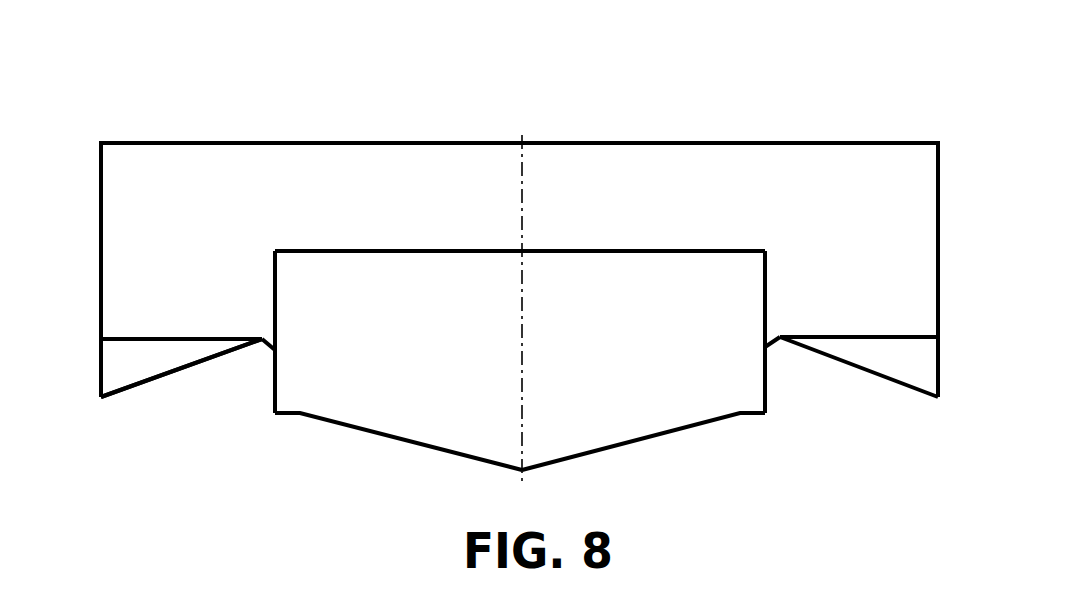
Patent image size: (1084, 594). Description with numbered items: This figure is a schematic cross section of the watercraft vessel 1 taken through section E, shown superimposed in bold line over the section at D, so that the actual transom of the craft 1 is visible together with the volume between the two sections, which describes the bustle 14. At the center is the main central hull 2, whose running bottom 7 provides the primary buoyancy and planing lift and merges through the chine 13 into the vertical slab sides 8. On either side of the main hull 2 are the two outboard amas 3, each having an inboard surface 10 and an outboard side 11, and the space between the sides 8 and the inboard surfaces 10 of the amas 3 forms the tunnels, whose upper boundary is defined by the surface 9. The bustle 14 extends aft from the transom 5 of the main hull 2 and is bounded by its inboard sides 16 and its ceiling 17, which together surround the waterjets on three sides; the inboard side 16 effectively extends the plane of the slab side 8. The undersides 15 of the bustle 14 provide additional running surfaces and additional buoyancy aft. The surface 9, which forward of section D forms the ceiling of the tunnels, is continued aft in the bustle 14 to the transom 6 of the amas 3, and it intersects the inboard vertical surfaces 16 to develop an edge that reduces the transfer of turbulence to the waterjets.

The watercraft vessel 1 is at (370, 96).
The main central hull 2 is at (574, 430).
The outboard amas 3 is at (131, 366).
The transom 5 is at (539, 349).
The transom 6 is at (519, 307).
The main hull running bottom 7 is at (377, 437).
The side of main hull 8 is at (279, 385).
The surface 9 is at (264, 350).
The inboard surface of ama 10 is at (167, 371).
The outboard side of ama 11 is at (99, 347).
The chine 13 is at (758, 419).
The bustle 14 is at (654, 165).
The undersides of bustle 15 is at (867, 333).
The inboard sides of bustle 16 is at (278, 285).
The ceiling of bustle 17 is at (461, 247).